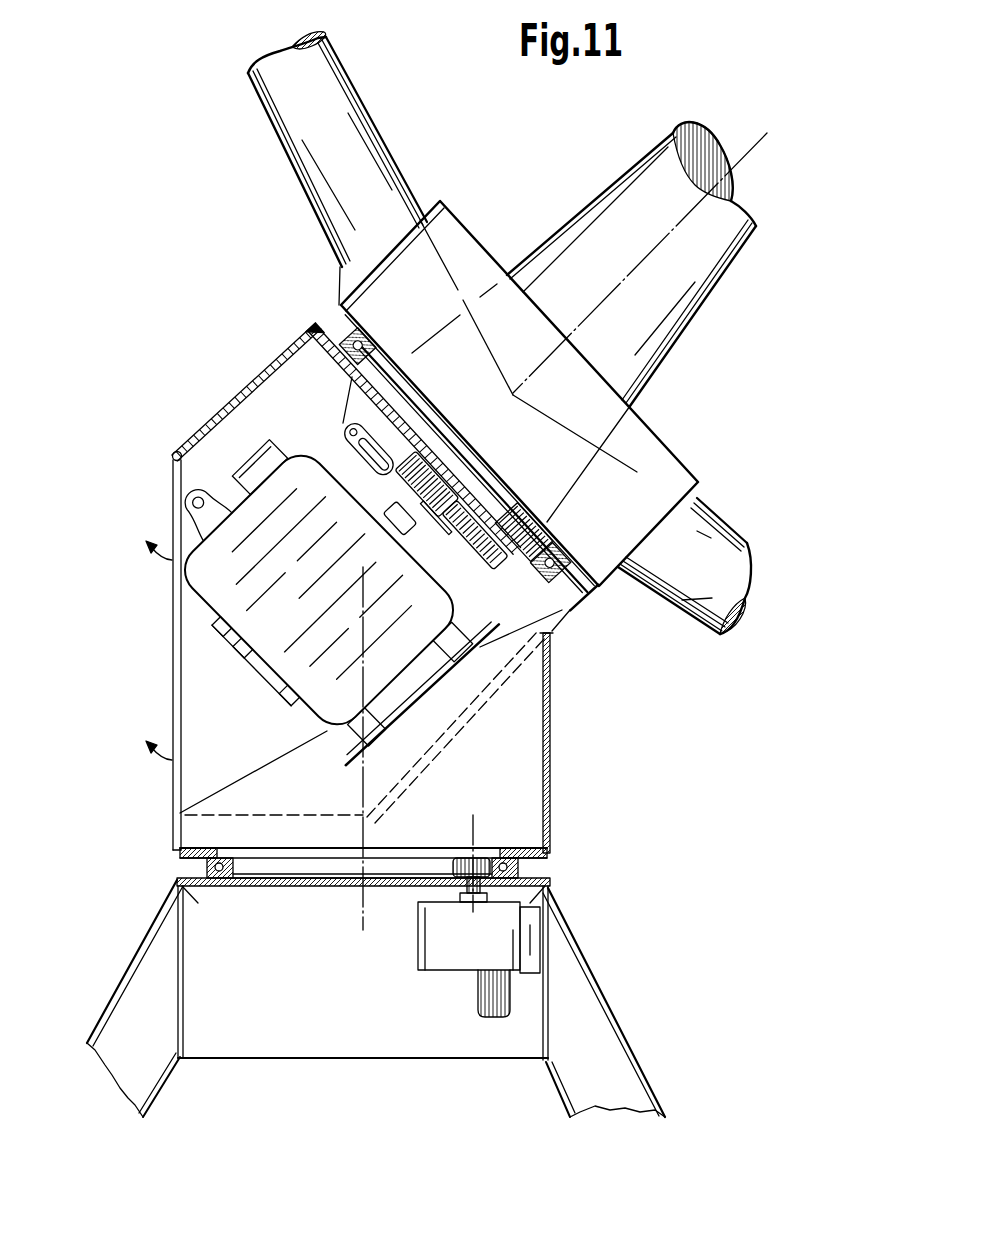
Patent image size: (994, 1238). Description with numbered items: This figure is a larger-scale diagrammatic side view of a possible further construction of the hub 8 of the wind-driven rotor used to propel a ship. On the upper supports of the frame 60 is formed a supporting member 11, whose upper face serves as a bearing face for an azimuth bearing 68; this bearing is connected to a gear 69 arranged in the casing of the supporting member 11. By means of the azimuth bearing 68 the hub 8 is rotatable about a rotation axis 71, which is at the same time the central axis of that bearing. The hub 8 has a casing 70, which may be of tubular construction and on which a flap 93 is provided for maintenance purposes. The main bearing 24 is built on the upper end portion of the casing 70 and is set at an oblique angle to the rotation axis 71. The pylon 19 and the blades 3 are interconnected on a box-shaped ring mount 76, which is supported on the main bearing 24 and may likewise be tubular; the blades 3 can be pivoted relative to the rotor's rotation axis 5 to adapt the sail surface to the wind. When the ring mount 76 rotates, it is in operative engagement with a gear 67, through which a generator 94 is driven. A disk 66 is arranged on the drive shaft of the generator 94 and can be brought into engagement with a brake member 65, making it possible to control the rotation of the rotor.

The blades 3 is at (357, 130).
The rotation axis 5 is at (668, 240).
The hub 8 is at (197, 209).
The supporting member 11 is at (290, 1048).
The pylon 19 is at (604, 203).
The main bearing 24 is at (354, 538).
The frame 60 is at (142, 968).
The brake member 65 is at (348, 430).
The disk 66 is at (387, 473).
The gear 67 is at (561, 608).
The azimuth bearing 68 is at (540, 872).
The gear 69 is at (441, 960).
The casing 70 is at (212, 432).
The rotation axis 71 is at (360, 920).
The ring mount 76 is at (467, 248).
The flap 93 is at (173, 522).
The generator 94 is at (216, 596).